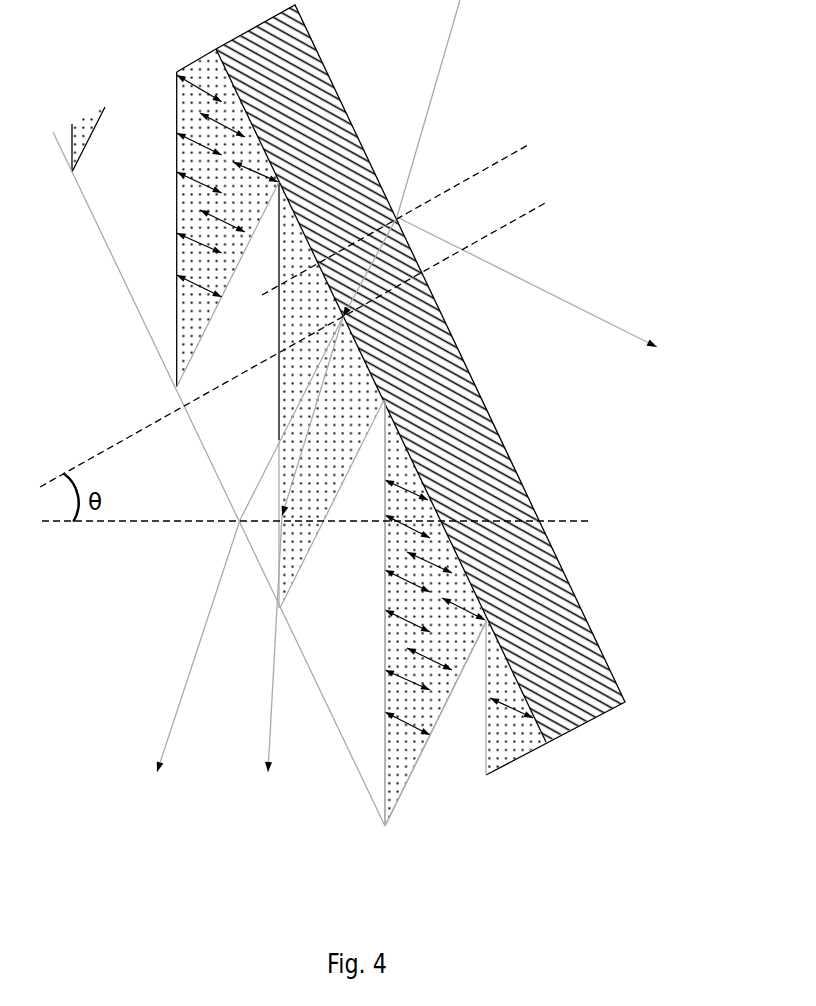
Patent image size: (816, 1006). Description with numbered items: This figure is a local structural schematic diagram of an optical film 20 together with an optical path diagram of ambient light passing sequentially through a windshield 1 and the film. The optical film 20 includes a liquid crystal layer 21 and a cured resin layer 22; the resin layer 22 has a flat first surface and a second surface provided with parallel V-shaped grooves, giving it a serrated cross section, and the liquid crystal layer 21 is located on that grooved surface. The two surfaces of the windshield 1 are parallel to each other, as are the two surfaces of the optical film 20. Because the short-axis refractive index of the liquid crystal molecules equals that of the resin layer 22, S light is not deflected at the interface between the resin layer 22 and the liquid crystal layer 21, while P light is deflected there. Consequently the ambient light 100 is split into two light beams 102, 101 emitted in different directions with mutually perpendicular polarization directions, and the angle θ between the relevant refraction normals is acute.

The windshield 1 is at (568, 658).
The optical film 20 is at (312, 888).
The liquid crystal layer 21 is at (408, 748).
The resin layer 22 is at (372, 765).
The ambient light 100 is at (435, 87).
The light beam 101 is at (173, 721).
The light beam 102 is at (268, 721).